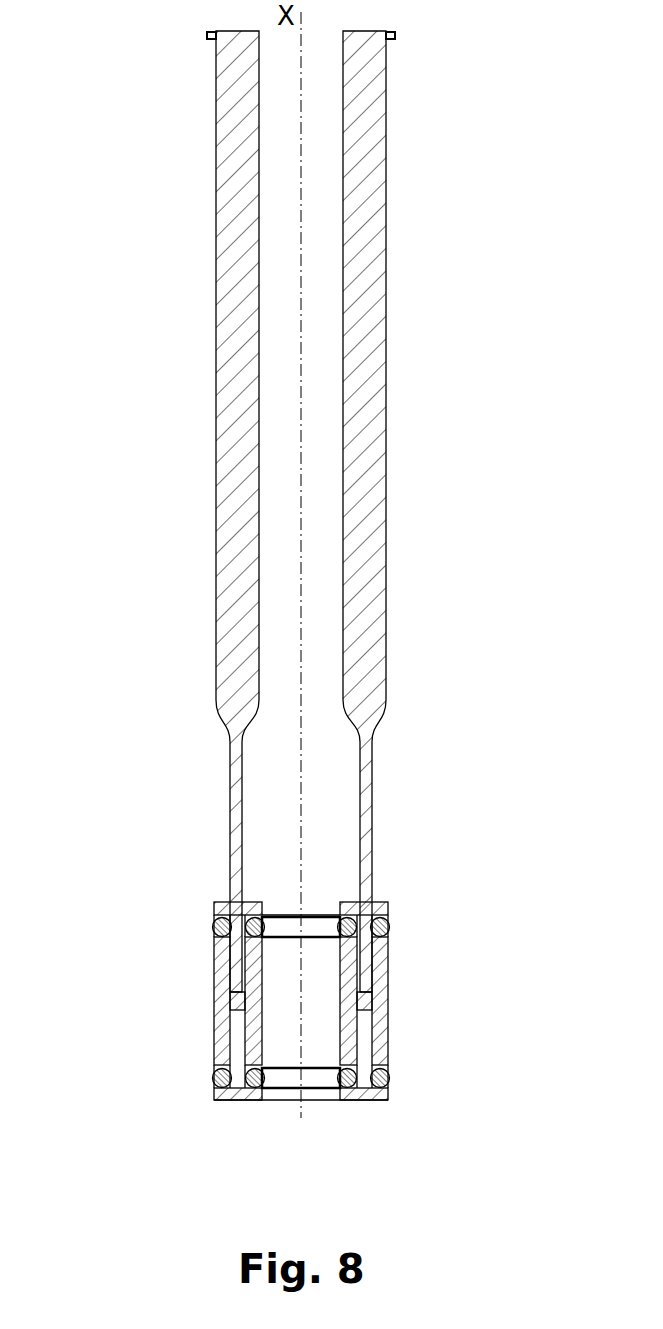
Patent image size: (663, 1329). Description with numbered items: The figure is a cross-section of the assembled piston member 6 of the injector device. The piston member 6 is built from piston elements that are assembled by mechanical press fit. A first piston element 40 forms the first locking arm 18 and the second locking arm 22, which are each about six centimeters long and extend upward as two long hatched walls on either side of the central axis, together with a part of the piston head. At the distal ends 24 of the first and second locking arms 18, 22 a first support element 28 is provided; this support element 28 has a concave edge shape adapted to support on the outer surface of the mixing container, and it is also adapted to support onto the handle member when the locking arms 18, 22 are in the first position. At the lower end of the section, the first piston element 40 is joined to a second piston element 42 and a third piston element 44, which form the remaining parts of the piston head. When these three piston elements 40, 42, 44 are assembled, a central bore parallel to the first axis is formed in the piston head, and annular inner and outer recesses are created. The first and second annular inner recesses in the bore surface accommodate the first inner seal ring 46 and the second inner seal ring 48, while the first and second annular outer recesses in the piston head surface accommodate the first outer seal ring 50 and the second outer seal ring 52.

The piston member 6 is at (172, 322).
The first locking arm 18 is at (236, 226).
The second locking arm 22 is at (365, 226).
The distal ends 24 is at (212, 36).
The first support element 28 is at (390, 36).
The first piston element 40 is at (217, 474).
The second piston element 42 is at (215, 1000).
The third piston element 44 is at (242, 1092).
The first inner seal ring 46 is at (280, 916).
The second inner seal ring 48 is at (333, 1088).
The first outer seal ring 50 is at (390, 922).
The second outer seal ring 52 is at (390, 1073).